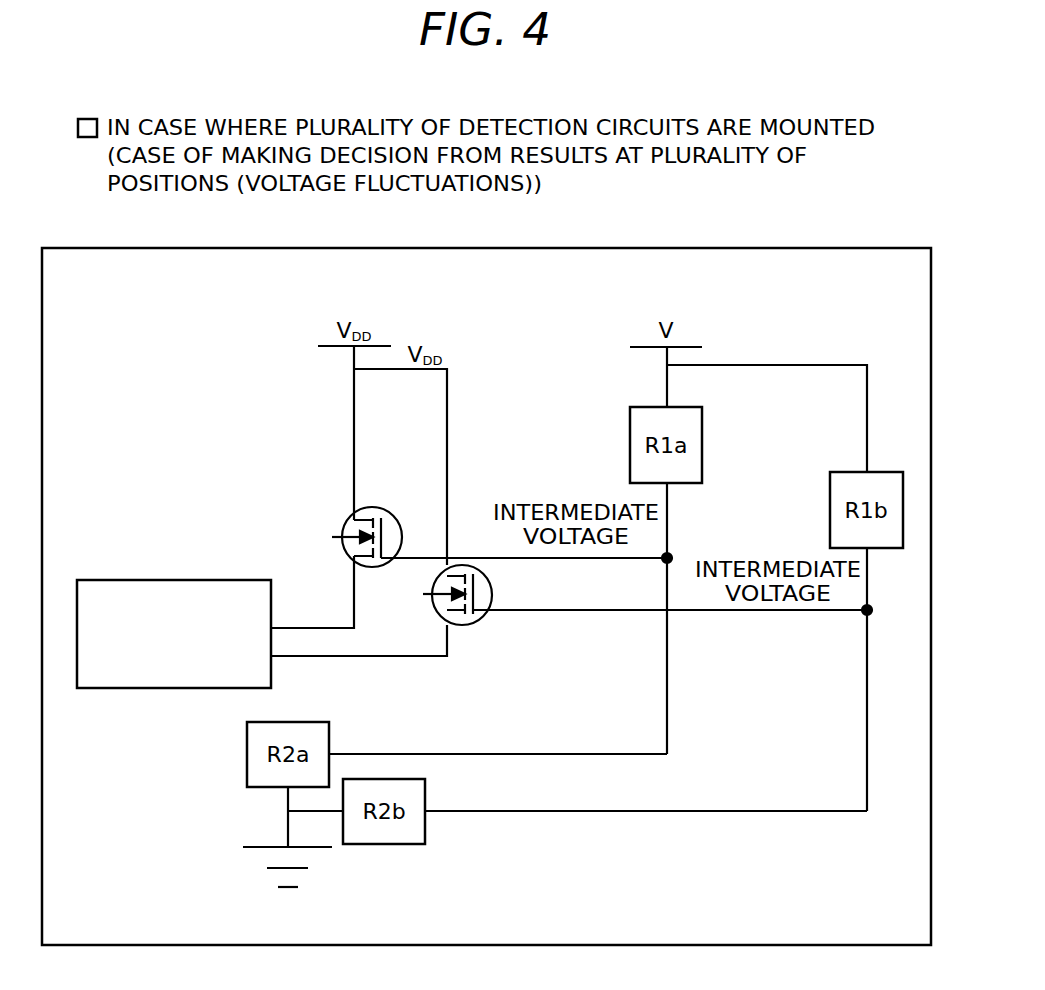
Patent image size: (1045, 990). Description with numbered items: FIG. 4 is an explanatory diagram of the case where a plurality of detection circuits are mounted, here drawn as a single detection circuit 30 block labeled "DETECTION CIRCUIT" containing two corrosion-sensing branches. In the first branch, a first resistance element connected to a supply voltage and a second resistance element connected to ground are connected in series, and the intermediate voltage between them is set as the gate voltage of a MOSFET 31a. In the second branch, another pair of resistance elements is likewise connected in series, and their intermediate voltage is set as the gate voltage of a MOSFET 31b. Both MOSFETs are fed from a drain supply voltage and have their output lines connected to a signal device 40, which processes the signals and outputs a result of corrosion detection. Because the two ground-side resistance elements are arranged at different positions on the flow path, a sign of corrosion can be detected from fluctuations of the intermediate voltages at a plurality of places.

The detection circuit 30 is at (868, 248).
The MOSFET 31a is at (350, 518).
The MOSFET 31b is at (478, 622).
The signal device 40 is at (125, 580).